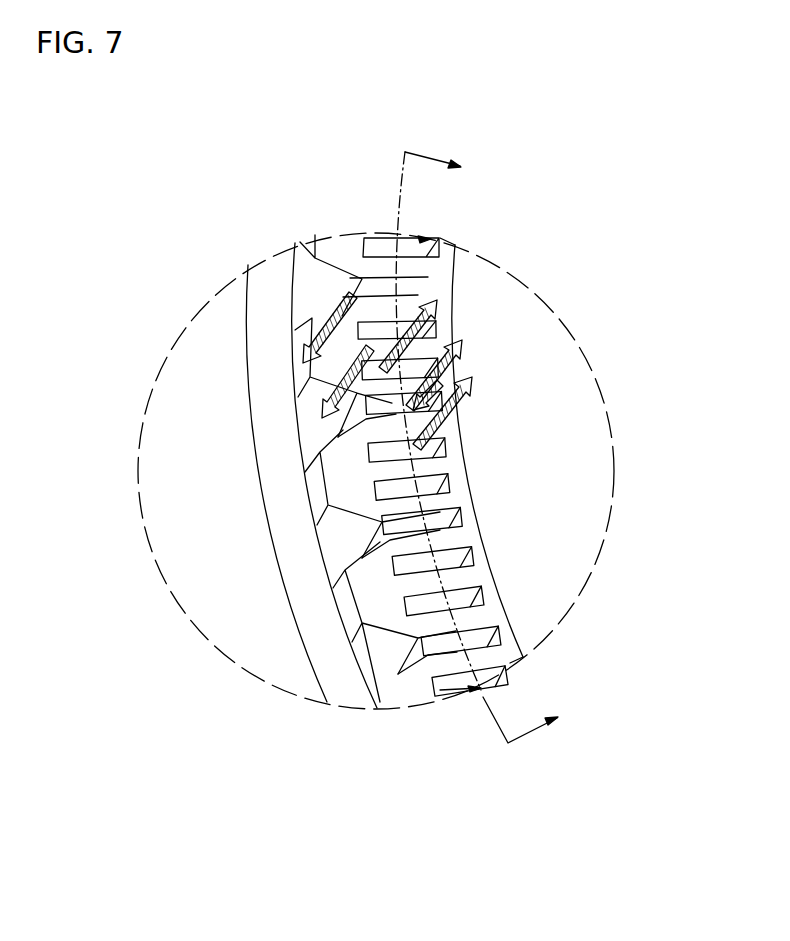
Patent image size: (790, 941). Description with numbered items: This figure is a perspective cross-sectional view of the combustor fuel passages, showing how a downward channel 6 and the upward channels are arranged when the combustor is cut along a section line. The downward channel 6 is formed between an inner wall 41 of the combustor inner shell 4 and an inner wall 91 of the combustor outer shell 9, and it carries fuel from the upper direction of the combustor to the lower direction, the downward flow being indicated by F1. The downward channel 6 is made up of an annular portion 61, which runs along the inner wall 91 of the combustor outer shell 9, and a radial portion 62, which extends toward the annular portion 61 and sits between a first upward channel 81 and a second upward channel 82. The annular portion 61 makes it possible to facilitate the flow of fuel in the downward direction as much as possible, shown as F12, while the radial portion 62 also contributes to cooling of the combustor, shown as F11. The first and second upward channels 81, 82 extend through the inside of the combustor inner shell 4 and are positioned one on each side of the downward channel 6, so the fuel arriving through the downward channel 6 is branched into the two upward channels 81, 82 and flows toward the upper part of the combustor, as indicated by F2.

The combustor inner shell 4 is at (465, 427).
The inner wall of the combustor inner shell 41 is at (352, 537).
The downward channel 6 is at (313, 432).
The annular portion 61 is at (313, 432).
The radial portion 62 is at (387, 407).
The first upward channel 81 is at (395, 372).
The second upward channel 82 is at (450, 487).
The combustor outer shell 9 is at (237, 527).
The inner wall of the combustor outer shell 91 is at (320, 558).
The downward fuel flow F1 is at (348, 381).
The cooling flow through radial portion F11 is at (449, 362).
The downward flow along annular portion F12 is at (345, 300).
The upward fuel flow F2 is at (436, 361).